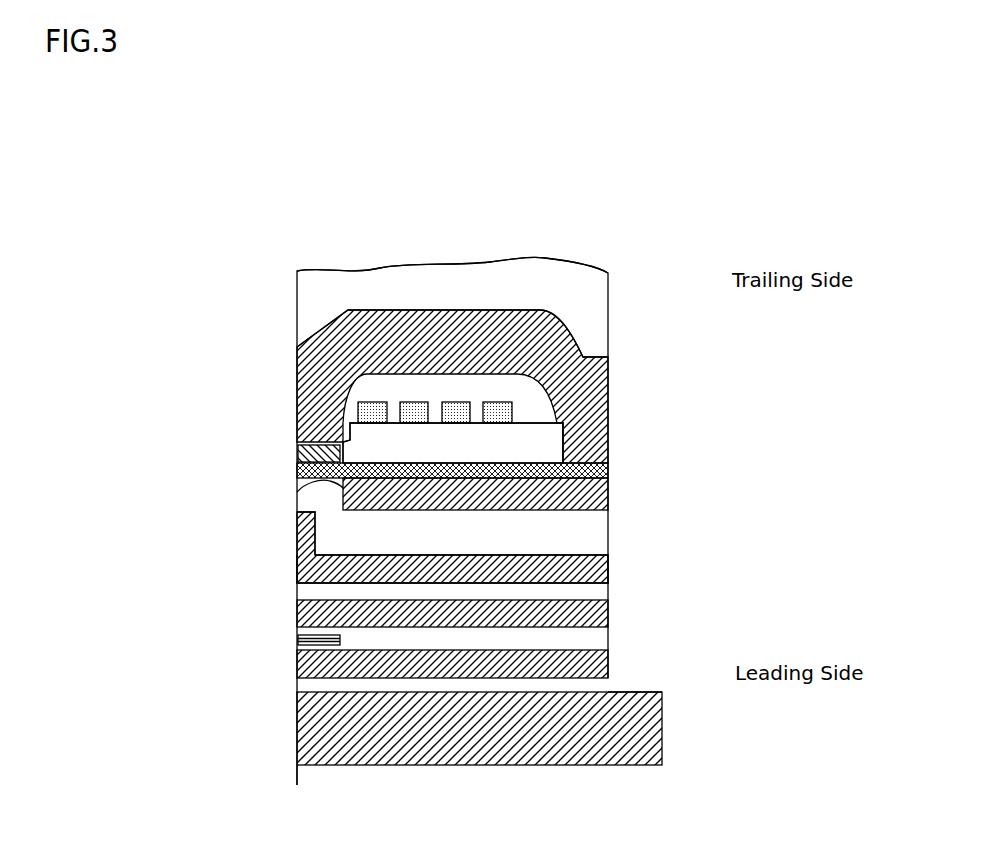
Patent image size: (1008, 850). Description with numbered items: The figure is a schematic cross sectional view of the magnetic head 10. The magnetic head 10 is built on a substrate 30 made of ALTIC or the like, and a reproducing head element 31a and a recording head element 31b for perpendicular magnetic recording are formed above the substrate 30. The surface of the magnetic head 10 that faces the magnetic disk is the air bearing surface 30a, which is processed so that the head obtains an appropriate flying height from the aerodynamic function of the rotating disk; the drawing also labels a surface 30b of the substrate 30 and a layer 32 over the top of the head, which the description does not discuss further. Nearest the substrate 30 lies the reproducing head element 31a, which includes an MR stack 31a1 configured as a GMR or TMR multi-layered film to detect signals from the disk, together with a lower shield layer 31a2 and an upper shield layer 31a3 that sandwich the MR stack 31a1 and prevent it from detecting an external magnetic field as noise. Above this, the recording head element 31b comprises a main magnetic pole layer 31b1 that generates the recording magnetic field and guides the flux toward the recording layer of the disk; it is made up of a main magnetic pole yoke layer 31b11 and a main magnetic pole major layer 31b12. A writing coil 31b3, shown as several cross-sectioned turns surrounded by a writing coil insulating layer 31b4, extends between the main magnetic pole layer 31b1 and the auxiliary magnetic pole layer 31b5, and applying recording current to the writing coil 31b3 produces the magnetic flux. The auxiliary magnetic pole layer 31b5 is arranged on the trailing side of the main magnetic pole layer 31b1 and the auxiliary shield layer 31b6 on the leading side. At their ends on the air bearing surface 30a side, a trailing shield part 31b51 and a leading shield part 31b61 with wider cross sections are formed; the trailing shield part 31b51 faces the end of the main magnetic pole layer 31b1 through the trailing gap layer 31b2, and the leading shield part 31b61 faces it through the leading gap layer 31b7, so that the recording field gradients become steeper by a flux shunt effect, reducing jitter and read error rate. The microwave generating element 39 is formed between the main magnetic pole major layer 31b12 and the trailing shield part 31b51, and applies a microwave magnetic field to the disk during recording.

The magnetic head 10 is at (631, 238).
The substrate 30 is at (663, 718).
The air bearing surface 30a is at (299, 797).
The substrate upper surface 30b is at (623, 692).
The reproducing head element 31a is at (192, 602).
The MR stack 31a1 is at (297, 640).
The lower shield layer 31a2 is at (297, 665).
The upper shield layer 31a3 is at (297, 608).
The recording head element 31b is at (120, 368).
The main magnetic pole layer 31b1 is at (197, 447).
The main magnetic pole yoke layer 31b11 is at (297, 487).
The main magnetic pole major layer 31b12 is at (297, 468).
The trailing gap layer 31b2 is at (297, 434).
The writing coil 31b3 is at (458, 424).
The writing coil insulating layer 31b4 is at (446, 399).
The auxiliary magnetic pole layer 31b5 is at (297, 366).
The trailing shield part 31b51 is at (297, 393).
The auxiliary shield layer 31b6 is at (297, 565).
The leading shield part 31b61 is at (297, 536).
The leading gap layer 31b7 is at (297, 509).
The protective film 32 is at (446, 296).
The microwave generating element 39 is at (342, 452).